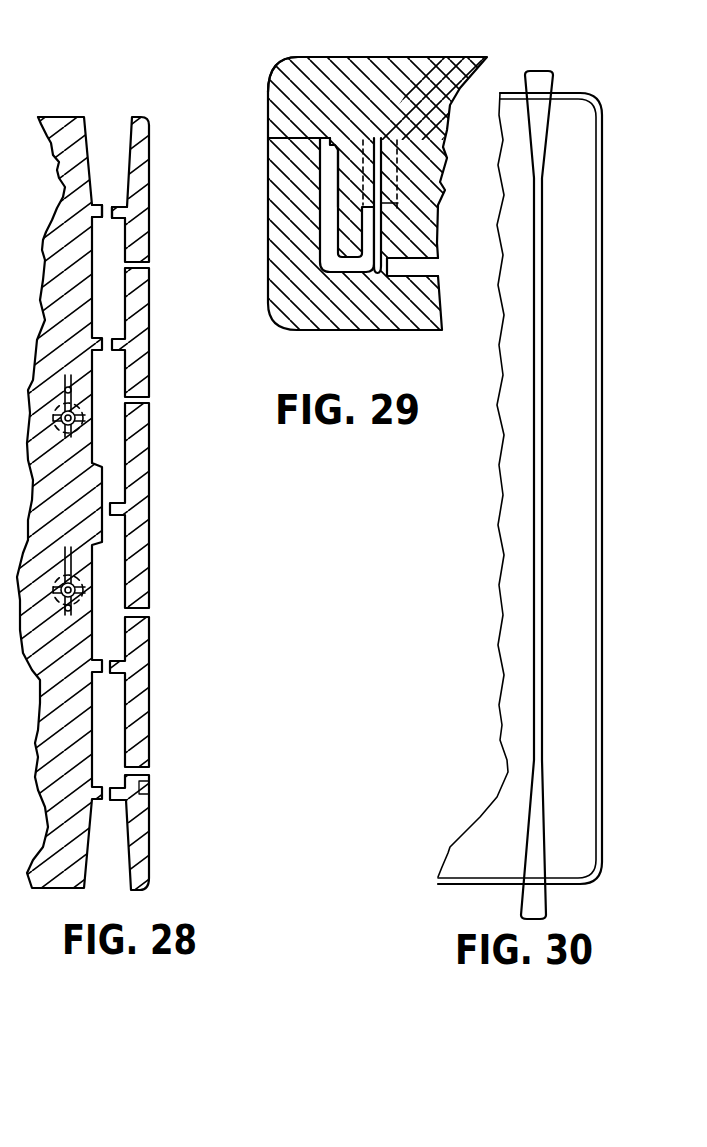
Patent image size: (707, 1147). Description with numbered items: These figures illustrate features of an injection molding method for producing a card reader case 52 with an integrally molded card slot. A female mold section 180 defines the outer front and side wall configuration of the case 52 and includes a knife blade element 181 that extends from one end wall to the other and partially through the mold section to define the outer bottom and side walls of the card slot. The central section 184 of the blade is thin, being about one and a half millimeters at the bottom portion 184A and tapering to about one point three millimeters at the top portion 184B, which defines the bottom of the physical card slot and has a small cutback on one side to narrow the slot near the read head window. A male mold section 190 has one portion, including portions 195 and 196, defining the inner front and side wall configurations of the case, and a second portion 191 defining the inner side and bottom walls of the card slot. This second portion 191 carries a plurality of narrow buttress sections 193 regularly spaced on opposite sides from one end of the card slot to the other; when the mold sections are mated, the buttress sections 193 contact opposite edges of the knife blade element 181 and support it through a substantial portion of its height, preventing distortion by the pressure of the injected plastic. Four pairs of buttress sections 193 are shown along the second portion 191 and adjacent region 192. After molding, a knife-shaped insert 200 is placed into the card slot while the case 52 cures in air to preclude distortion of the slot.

In FIG. 30, the case 52 is at (547, 450).
In FIG. 29, the female mold section 180 is at (268, 268).
In FIG. 29, the knife blade element 181 is at (390, 258).
In FIG. 29, the central section 184 is at (381, 209).
In FIG. 29, the bottom portion 184A is at (372, 276).
In FIG. 29, the top portion 184B is at (375, 176).
In FIG. 28, the male mold section 190 is at (177, 503).
In FIG. 29, the male mold section 190 is at (372, 56).
In FIG. 28, the second portion 191 is at (117, 452).
In FIG. 29, the second portion 191 is at (287, 323).
In FIG. 28, the ring segment 192 is at (143, 614).
In FIG. 28, the buttress sections 193 is at (108, 208).
In FIG. 29, the buttress sections 193 is at (397, 138).
In FIG. 29, the portion defining inner front and side wall configurations 195 is at (382, 170).
In FIG. 29, the portion defining inner front and side wall configurations 196 is at (420, 262).
In FIG. 30, the knife-shaped insert 200 is at (528, 497).